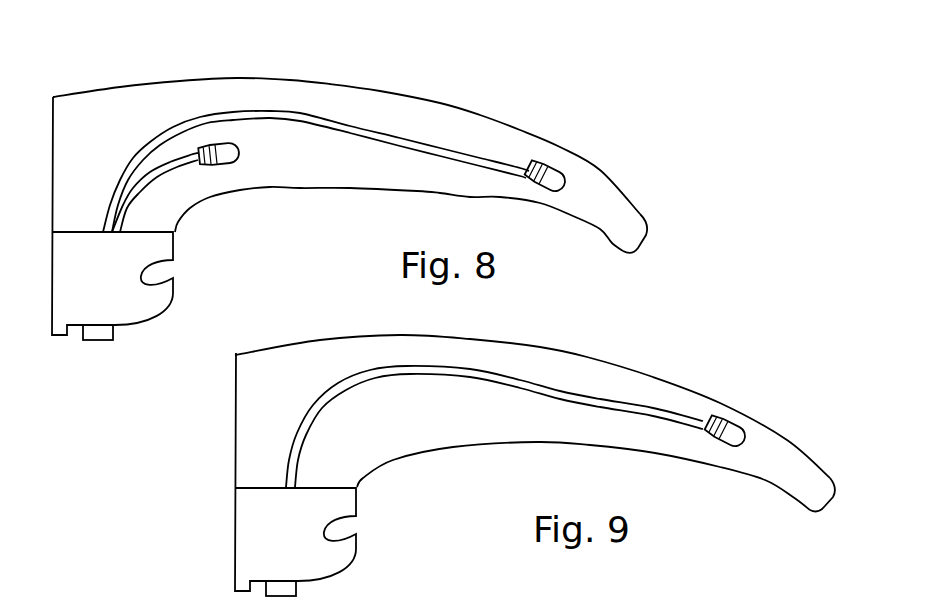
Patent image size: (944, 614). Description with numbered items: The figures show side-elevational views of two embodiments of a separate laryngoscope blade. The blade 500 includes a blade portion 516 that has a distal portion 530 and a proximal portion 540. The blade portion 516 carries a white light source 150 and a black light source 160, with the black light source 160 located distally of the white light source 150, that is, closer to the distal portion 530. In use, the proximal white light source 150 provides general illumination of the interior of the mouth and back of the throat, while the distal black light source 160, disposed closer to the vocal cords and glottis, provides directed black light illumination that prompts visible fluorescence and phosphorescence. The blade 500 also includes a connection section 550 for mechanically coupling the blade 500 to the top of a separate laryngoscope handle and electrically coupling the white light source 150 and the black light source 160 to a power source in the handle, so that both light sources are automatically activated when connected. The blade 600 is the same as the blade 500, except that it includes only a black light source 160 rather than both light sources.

In FIG. 8, the blade 500 is at (388, 204).
In FIG. 8, the blade portion 516 is at (239, 72).
In FIG. 8, the distal portion 530 is at (641, 195).
In FIG. 8, the proximal portion 540 is at (40, 110).
In FIG. 8, the connection section 550 is at (42, 310).
In FIG. 8, the white light source 150 is at (250, 153).
In FIG. 8, the black light source 160 is at (551, 158).
In FIG. 9, the black light source 160 is at (752, 417).
In FIG. 9, the separate laryngoscope blade 600 is at (555, 440).